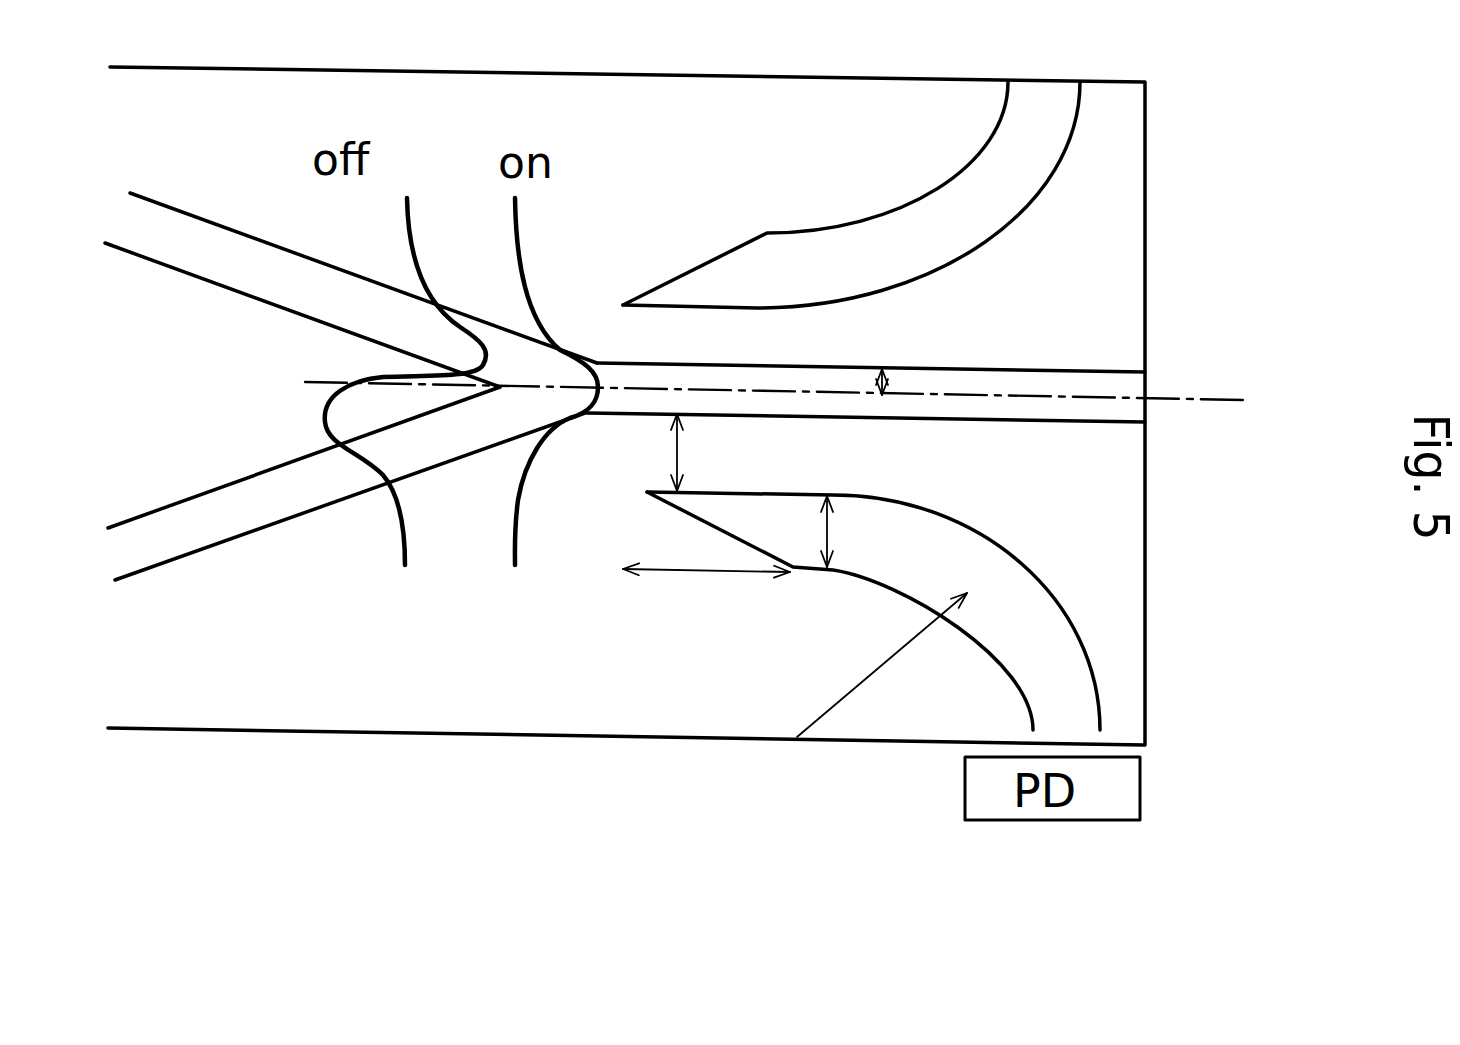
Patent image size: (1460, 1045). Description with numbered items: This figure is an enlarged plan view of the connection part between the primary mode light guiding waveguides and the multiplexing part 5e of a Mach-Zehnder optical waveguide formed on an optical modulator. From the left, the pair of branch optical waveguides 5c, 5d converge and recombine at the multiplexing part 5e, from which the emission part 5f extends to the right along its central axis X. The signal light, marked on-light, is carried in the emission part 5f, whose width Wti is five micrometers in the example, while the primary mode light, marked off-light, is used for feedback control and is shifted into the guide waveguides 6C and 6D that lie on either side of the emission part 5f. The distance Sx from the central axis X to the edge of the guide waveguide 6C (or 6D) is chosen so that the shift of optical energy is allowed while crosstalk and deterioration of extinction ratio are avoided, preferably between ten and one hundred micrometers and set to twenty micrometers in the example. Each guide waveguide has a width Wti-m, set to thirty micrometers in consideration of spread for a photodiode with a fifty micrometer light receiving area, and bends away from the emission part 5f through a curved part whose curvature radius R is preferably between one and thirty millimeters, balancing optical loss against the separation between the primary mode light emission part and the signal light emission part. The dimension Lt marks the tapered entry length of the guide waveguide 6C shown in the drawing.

The branch optical waveguide 5c is at (237, 528).
The branch optical waveguide 5d is at (235, 287).
The multiplexing part 5e is at (527, 363).
The emission part 5f is at (1073, 372).
The guide waveguide 6C is at (1050, 612).
The guide waveguide 6D is at (892, 232).
The central axis X is at (1182, 398).
The width of the signal light emission part Wti is at (924, 356).
The width of the guiding waveguide Wti-m is at (900, 524).
The distance from central axis to guide waveguide Sx is at (677, 442).
The taper length Lt is at (703, 572).
The curvature radius of the curved part R is at (882, 665).